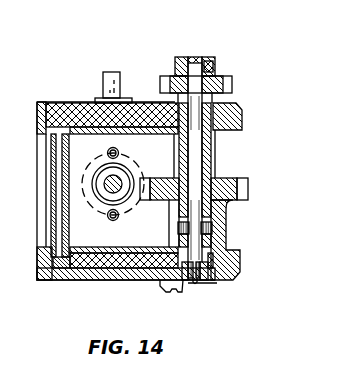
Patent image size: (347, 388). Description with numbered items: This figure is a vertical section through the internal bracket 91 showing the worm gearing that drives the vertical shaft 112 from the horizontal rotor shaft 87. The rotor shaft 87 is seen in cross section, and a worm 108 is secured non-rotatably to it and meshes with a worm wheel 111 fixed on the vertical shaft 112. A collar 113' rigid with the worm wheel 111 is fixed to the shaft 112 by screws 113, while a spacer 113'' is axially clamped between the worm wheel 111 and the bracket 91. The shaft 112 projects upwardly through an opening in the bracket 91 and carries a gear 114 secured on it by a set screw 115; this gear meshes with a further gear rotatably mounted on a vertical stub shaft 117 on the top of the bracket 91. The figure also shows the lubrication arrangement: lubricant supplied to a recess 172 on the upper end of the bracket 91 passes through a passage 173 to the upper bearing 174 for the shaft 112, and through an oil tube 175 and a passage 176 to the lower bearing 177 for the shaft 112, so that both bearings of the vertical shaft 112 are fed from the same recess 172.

The rotor shaft 87 is at (118, 182).
The internal bracket 91 is at (82, 275).
The worm 108 is at (96, 211).
The worm wheel 111 is at (229, 180).
The vertical shaft 112 is at (240, 260).
The screws 113 is at (231, 233).
The collar 113' is at (224, 223).
The spacer 113'' is at (223, 160).
The gear 114 is at (177, 62).
The set screw 115 is at (213, 70).
The vertical stub shaft 117 is at (104, 84).
The recess 172 is at (55, 103).
The passage 173 is at (141, 120).
The upper bearing 174 is at (213, 113).
The oil tube 175 is at (52, 218).
The passage 176 is at (110, 268).
The lower bearing 177 is at (196, 283).